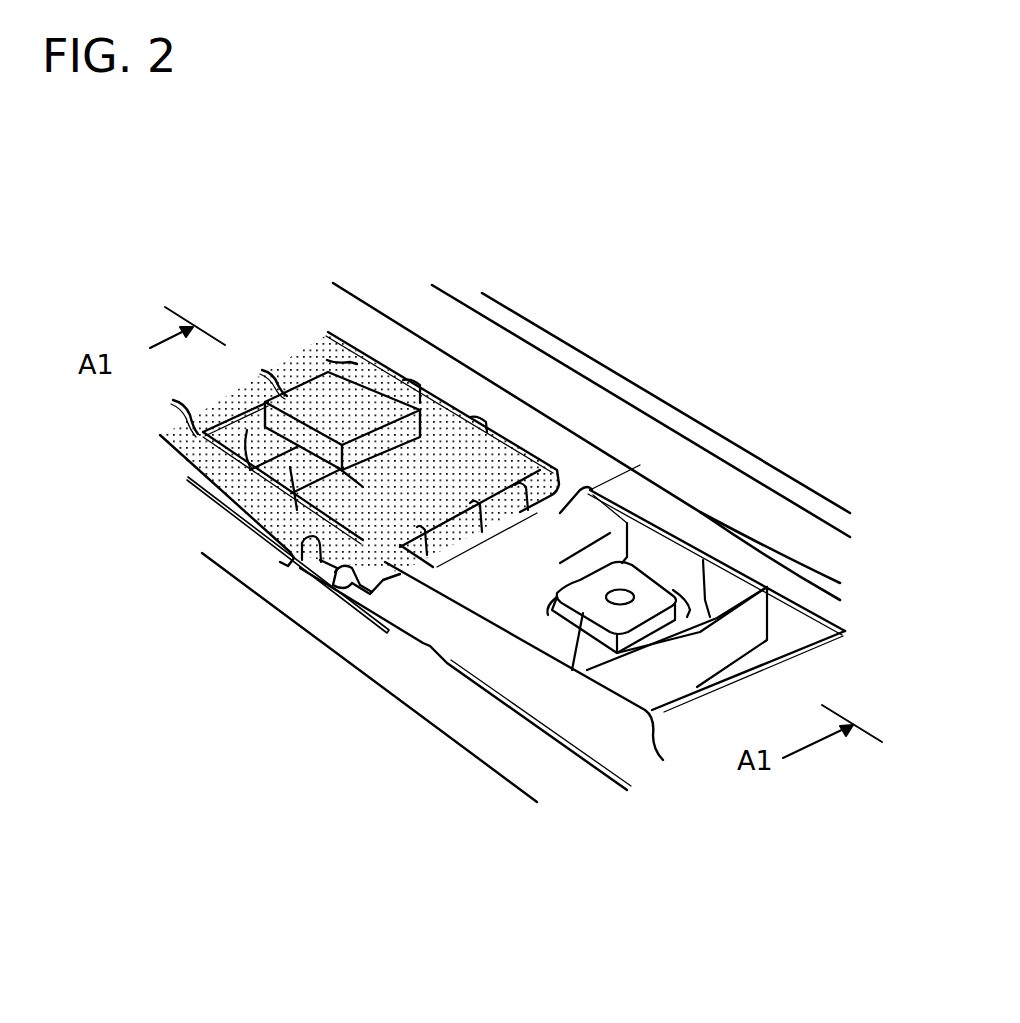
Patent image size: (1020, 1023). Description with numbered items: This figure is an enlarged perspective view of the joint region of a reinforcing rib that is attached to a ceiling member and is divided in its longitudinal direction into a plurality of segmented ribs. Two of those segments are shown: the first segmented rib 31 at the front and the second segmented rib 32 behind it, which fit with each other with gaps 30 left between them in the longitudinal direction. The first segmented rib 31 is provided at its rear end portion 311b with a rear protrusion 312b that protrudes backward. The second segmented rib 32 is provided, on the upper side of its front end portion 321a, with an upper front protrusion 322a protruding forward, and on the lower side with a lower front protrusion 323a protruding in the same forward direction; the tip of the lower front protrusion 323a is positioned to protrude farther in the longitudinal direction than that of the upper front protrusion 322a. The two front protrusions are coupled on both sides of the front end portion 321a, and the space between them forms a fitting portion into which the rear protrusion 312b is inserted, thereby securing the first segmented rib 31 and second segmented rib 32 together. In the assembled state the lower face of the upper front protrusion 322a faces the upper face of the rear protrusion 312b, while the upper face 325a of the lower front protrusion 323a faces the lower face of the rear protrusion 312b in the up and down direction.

The gap 30 is at (575, 527).
The first segmented rib 31 is at (362, 398).
The rear end portion 311b is at (473, 480).
The rear protrusion 312b is at (530, 460).
The second segmented rib 32 is at (655, 584).
The front end portion 321a is at (565, 513).
The upper front protrusion 322a is at (603, 532).
The lower front protrusion 323a is at (345, 600).
The upper face 325a is at (368, 592).